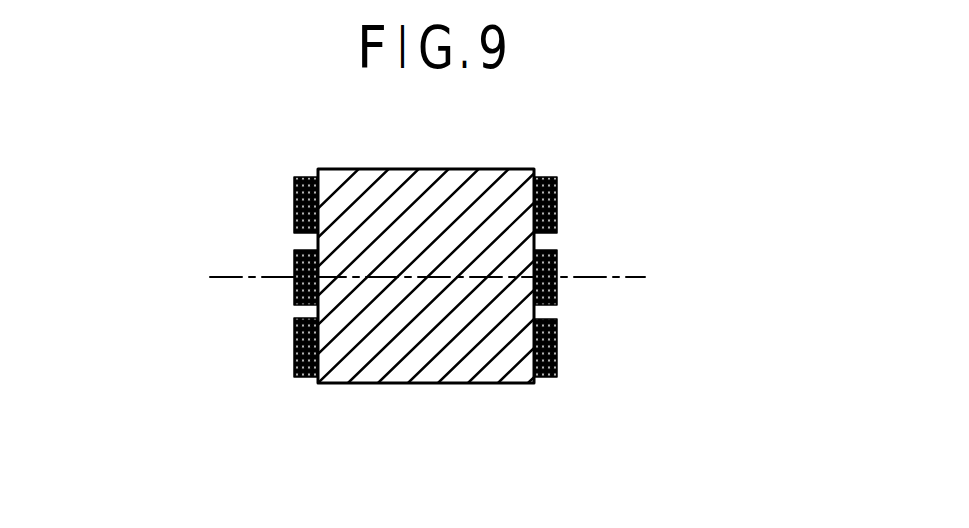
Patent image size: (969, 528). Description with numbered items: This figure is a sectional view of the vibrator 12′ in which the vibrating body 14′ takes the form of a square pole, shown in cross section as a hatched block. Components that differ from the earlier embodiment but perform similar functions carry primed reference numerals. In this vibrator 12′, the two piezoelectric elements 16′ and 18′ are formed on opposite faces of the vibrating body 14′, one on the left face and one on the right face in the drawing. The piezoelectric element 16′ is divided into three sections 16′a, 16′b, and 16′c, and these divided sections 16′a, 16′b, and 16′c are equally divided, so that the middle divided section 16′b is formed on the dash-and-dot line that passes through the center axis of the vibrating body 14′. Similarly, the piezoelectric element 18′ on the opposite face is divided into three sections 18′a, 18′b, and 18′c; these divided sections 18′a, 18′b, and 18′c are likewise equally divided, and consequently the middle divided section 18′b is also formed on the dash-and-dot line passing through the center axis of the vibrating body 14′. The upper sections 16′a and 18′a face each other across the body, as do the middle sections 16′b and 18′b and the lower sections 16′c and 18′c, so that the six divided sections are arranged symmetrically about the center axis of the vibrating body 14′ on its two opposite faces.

The vibrator 12′ is at (173, 59).
The vibrating body 14′ is at (487, 375).
The piezoelectric element 16′ is at (96, 172).
The divided section 16′a is at (290, 200).
The divided section 16′b is at (290, 260).
The divided section 16′c is at (290, 350).
The piezoelectric element 18′ is at (742, 173).
The divided section 18′a is at (560, 208).
The divided section 18′b is at (560, 263).
The divided section 18′c is at (560, 347).